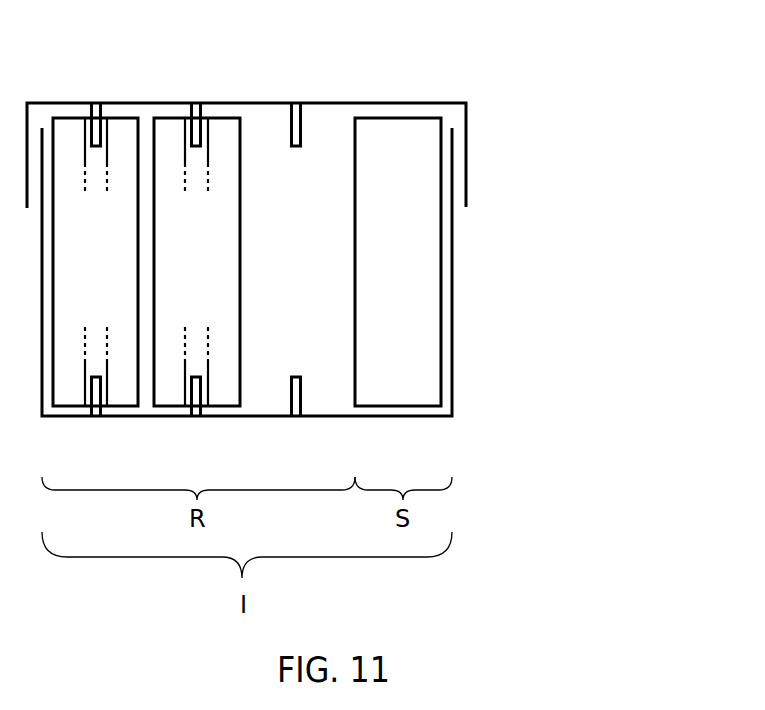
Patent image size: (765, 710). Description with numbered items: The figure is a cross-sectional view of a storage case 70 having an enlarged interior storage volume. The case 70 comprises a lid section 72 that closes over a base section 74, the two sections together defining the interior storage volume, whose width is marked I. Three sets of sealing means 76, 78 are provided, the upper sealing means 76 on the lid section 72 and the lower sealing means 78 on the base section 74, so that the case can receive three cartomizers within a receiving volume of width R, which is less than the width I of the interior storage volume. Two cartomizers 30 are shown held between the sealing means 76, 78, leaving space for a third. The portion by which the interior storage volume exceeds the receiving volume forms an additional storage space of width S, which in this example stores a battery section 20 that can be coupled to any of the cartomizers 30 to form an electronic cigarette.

The case 70 is at (580, 110).
The lid section 72 is at (378, 103).
The base section 74 is at (453, 365).
The cartomizer 30 is at (108, 279).
The battery section 20 is at (421, 281).
The sealing means 76 is at (93, 103).
The sealing means 78 is at (96, 418).